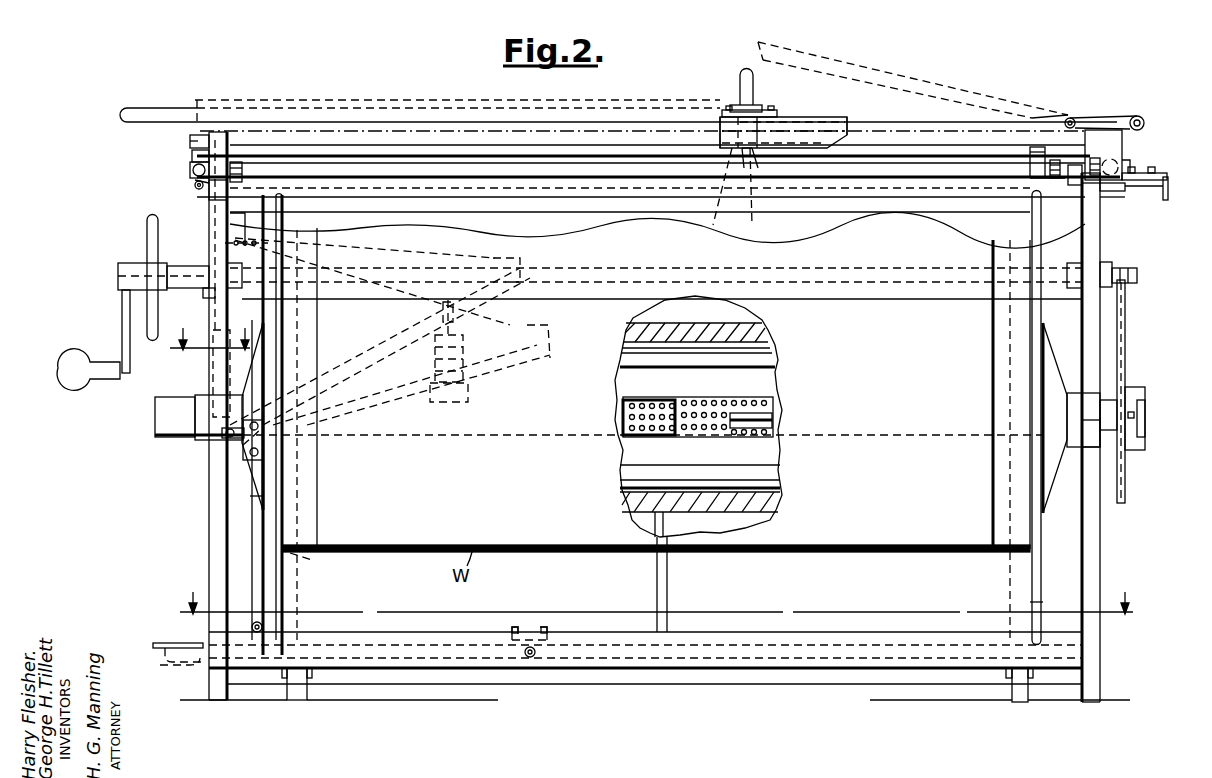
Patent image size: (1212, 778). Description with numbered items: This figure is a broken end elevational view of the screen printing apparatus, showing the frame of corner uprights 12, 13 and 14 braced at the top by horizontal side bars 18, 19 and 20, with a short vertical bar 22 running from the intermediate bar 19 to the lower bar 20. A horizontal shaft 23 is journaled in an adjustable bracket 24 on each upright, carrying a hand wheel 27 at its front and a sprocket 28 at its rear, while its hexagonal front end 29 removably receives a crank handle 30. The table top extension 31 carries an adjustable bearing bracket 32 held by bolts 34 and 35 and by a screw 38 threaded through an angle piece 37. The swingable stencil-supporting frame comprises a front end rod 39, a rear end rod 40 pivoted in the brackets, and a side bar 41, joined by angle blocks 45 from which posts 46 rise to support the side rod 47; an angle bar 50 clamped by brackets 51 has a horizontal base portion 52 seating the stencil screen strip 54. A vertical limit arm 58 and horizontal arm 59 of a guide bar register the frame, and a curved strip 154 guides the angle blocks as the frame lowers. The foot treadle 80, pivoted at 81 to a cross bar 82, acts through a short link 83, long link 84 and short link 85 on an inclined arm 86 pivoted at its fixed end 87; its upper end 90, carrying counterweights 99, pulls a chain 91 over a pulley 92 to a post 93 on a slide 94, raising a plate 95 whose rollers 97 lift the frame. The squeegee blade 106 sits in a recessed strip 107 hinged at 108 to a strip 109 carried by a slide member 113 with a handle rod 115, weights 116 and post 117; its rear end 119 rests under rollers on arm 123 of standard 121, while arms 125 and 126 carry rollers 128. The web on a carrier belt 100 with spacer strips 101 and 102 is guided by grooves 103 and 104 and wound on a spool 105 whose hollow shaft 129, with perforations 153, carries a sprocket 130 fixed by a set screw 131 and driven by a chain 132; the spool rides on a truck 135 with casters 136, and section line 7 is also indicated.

The corner upright 12 is at (209, 531).
The corner upright 13 is at (1100, 531).
The corner upright 14 is at (659, 591).
The section line 7- 7 is at (208, 328).
The horizontal side bar 18 is at (1005, 212).
The intermediate horizontal side bar 19 is at (1067, 505).
The lower horizontal side bar 20 is at (678, 686).
The short vertical bar 22 is at (667, 592).
The horizontal shaft 23 is at (205, 266).
The bracket 24 is at (300, 299).
The hand wheel 27 is at (147, 224).
The sprocket 28 is at (1137, 271).
The front shaft end 29 is at (118, 273).
The crank handle 30 is at (122, 326).
The table top extension 31 is at (1105, 205).
The bearing bracket 32 is at (1118, 194).
The bolt 34 is at (1134, 170).
The bolt 35 is at (1153, 171).
The angle piece 37 is at (1163, 200).
The screw 38 is at (1167, 192).
The front end rod 39 is at (193, 182).
The rear end rod 40 is at (1131, 152).
The side bar 41 is at (705, 178).
The angle block 45 is at (190, 170).
The post 46 is at (192, 155).
The side rod 47 is at (500, 133).
The angle bar 50 is at (1080, 186).
The clamping bracket 51 is at (211, 198).
The horizontal base portion 52 is at (234, 212).
The stencil screen strip 54 is at (895, 152).
The vertical limit arm 58 is at (1030, 156).
The horizontal arm 59 is at (1050, 182).
The foot treadle 80 is at (176, 643).
The pivot 81 is at (528, 660).
The cross bar 82 is at (547, 627).
The short upstanding link 83 is at (262, 626).
The long vertical link 84 is at (263, 586).
The short vertical link 85 is at (265, 452).
The inclined arm 86 is at (364, 353).
The lower fixed end 87 is at (228, 445).
The upper end of arm 90 is at (521, 272).
The chain 91 is at (364, 249).
The pulley 92 is at (232, 244).
The post 93 is at (224, 437).
The vertical slide 94 is at (213, 377).
The upstanding plate 95 is at (203, 293).
The roller 97 is at (196, 188).
The counterweight 99 is at (470, 386).
The carrier belt 100 is at (318, 533).
The spacer strip 101 is at (312, 558).
The spacer strip 102 is at (1003, 555).
The transverse groove 103 is at (380, 226).
The transverse groove 104 is at (1025, 178).
The spool 105 is at (262, 496).
The squeegee blade 106 is at (758, 205).
The recessed strip 107 is at (722, 205).
The hinge 108 is at (711, 118).
The strip 109 is at (760, 110).
The slide member 113 is at (812, 121).
The handle rod 115 is at (436, 112).
The ring-shaped weight 116 is at (756, 102).
The vertical post 117 is at (741, 80).
The rear end of guide member 119 is at (866, 90).
The standard 121 is at (1112, 135).
The rearwardly extending arm 123 is at (1110, 128).
The forwardly extending angle arm 125 is at (1141, 117).
The forwardly extending angle arm 126 is at (1073, 117).
The roller 128 is at (1066, 118).
The hollow shaft 129 is at (160, 426).
The sprocket 130 is at (1125, 386).
The set screw 131 is at (1135, 411).
The chain 132 is at (1125, 336).
The truck 135 is at (830, 685).
The caster 136 is at (300, 700).
The perforation 153 is at (730, 440).
The curved strip 154 is at (190, 142).